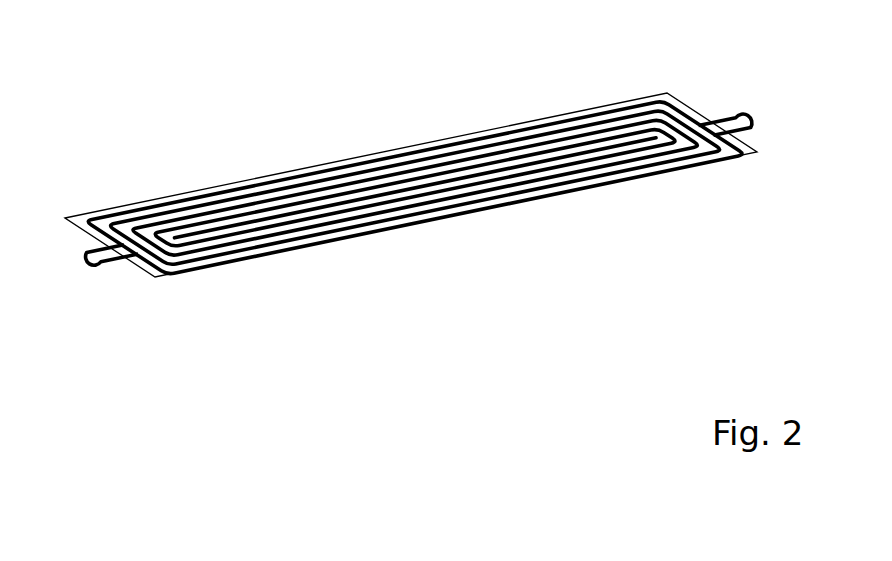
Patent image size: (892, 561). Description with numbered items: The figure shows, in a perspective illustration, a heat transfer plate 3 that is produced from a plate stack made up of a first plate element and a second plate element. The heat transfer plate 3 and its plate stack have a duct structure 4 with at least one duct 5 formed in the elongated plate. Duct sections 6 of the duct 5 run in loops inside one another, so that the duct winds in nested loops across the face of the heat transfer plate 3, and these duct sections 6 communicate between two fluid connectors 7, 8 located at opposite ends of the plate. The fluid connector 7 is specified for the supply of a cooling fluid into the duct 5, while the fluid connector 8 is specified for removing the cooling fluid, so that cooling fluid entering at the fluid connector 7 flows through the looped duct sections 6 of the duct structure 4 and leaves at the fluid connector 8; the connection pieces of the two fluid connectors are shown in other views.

The heat transfer plate 3 is at (563, 111).
The duct structure 4 is at (425, 149).
The duct 5 is at (144, 258).
The duct sections 6 is at (424, 216).
The fluid connector 7 is at (126, 251).
The fluid connector 8 is at (709, 123).